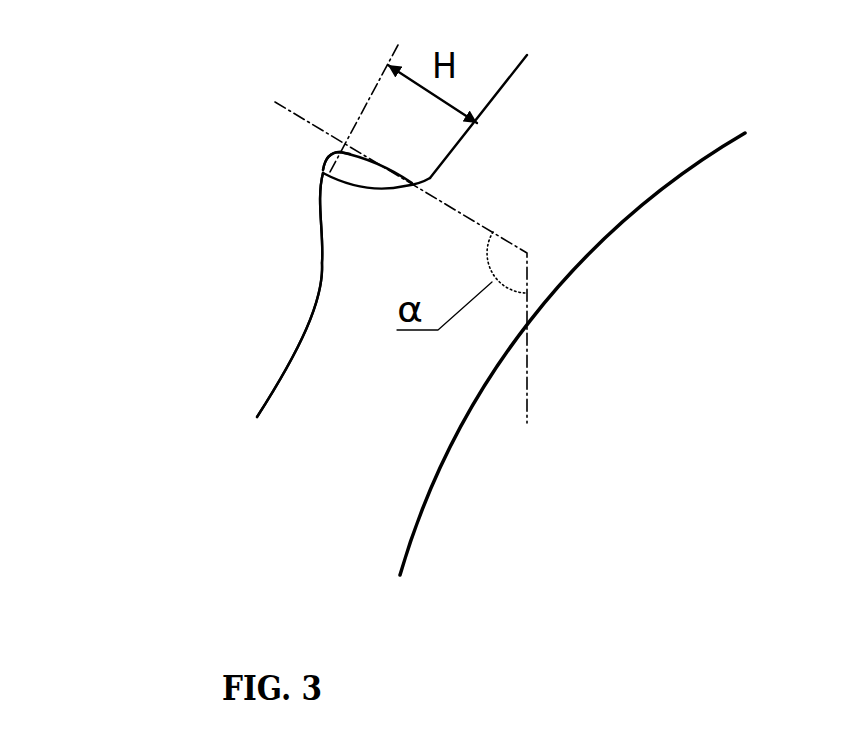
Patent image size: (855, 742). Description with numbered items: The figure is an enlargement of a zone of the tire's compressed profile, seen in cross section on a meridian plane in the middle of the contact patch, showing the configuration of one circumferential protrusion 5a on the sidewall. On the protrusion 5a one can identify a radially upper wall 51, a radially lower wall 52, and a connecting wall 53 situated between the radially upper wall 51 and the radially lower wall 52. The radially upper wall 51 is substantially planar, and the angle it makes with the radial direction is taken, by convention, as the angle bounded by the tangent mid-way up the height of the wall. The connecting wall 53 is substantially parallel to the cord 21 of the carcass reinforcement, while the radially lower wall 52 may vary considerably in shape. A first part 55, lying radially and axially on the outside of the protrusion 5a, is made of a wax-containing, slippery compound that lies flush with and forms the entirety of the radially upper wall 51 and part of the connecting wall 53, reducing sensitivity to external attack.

The protrusion 5a is at (363, 228).
The radially upper wall 51 is at (395, 172).
The radially lower wall 52 is at (313, 292).
The connecting wall 53 is at (312, 190).
The first part 55 is at (343, 165).
The cord 21 is at (678, 177).